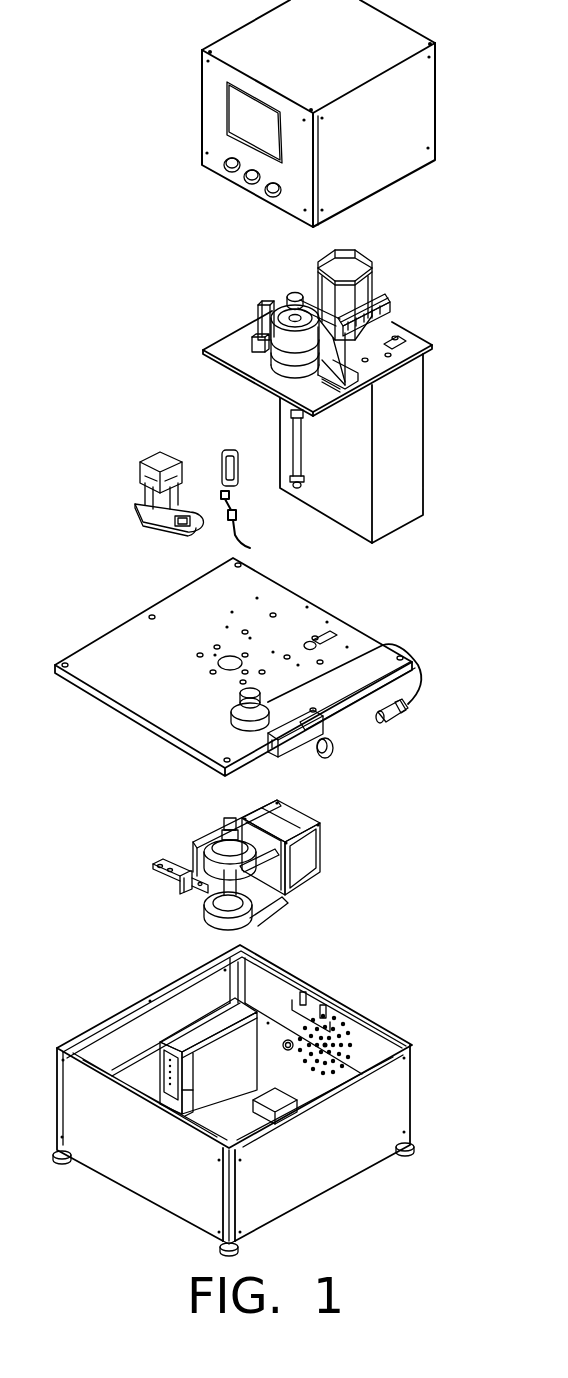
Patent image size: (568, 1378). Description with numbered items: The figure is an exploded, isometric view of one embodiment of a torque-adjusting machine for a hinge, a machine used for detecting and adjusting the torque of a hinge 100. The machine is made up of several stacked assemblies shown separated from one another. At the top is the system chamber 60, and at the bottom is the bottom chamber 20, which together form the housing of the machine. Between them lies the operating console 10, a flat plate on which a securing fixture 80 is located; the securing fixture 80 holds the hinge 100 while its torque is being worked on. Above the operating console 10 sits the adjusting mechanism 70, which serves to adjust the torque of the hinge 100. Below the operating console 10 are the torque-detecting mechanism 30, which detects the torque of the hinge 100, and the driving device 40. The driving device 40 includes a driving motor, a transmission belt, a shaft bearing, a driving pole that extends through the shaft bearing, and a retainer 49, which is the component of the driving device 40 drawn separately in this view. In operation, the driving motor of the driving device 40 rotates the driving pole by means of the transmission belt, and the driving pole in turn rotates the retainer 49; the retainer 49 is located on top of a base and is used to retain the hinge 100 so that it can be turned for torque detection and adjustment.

The operating console 10 is at (343, 632).
The bottom chamber 20 is at (375, 1093).
The torque-detecting mechanism 30 is at (205, 870).
The driving device 40 is at (287, 830).
The retainer 49 is at (227, 452).
The system chamber 60 is at (398, 118).
The adjusting mechanism 70 is at (376, 302).
The securing fixture 80 is at (147, 458).
The hinge 100 is at (249, 546).